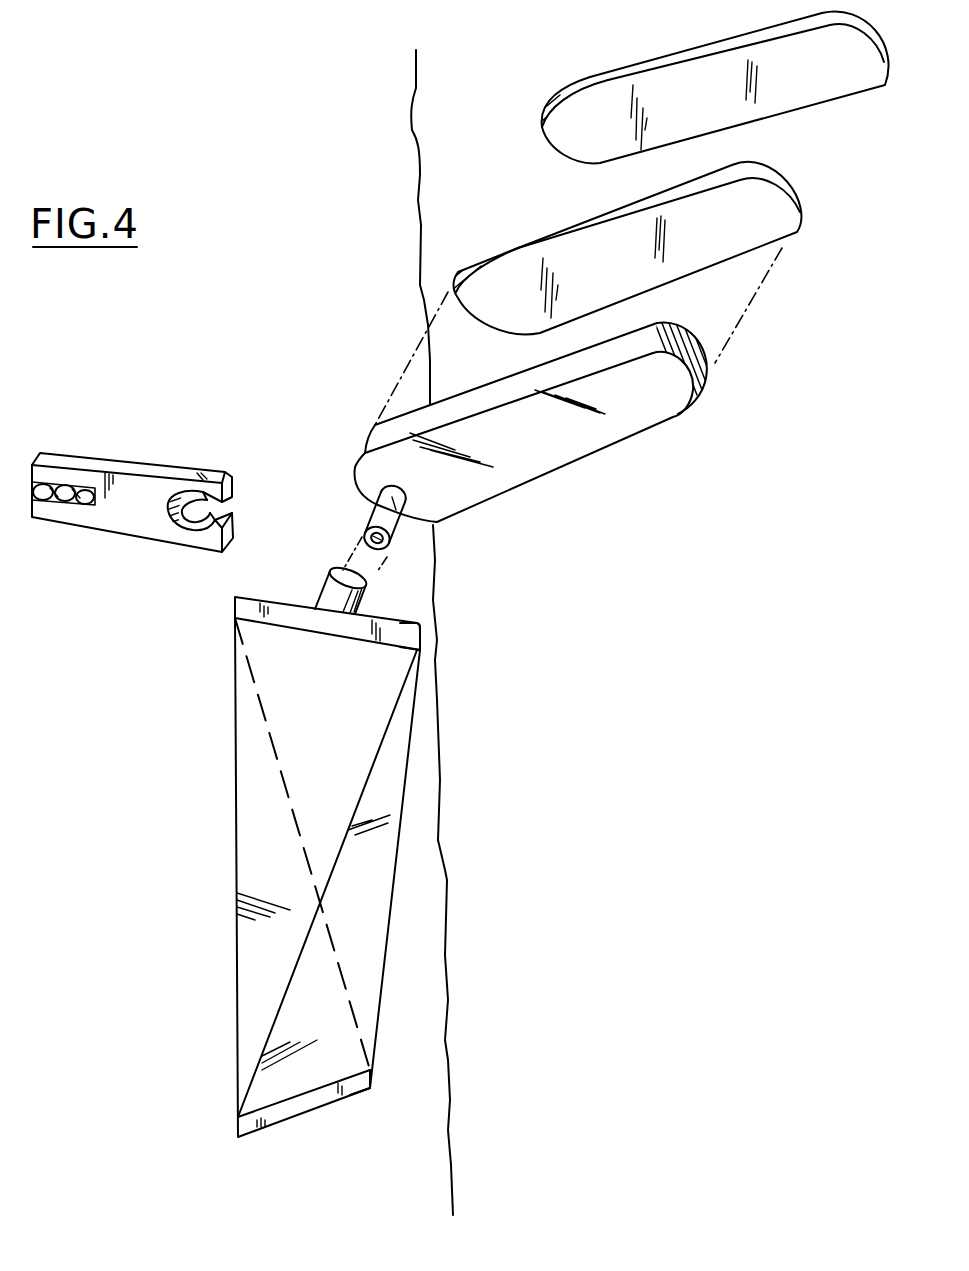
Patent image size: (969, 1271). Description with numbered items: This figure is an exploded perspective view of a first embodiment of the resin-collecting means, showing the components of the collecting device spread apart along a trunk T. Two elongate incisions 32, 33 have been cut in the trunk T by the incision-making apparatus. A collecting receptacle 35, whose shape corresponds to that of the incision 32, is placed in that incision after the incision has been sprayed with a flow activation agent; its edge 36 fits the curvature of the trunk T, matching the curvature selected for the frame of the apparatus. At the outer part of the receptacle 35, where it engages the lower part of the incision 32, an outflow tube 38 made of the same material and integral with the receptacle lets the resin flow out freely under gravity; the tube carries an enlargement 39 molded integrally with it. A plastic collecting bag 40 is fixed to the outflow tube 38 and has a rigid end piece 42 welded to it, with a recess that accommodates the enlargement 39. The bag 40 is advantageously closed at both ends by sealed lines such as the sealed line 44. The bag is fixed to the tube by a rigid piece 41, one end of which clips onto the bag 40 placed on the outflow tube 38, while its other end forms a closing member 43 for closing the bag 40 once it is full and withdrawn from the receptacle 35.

The trunk T is at (443, 218).
The incision 32 is at (483, 262).
The incision 33 is at (575, 74).
The collecting receptacle 35 is at (539, 420).
The edge 36 is at (591, 357).
The outflow tube 38 is at (403, 527).
The enlargement 39 is at (397, 528).
The collecting bag 40 is at (371, 867).
The rigid piece 41 is at (132, 499).
The rigid end piece 42 is at (368, 594).
The closing member 43 is at (65, 500).
The sealed line 44 is at (413, 640).